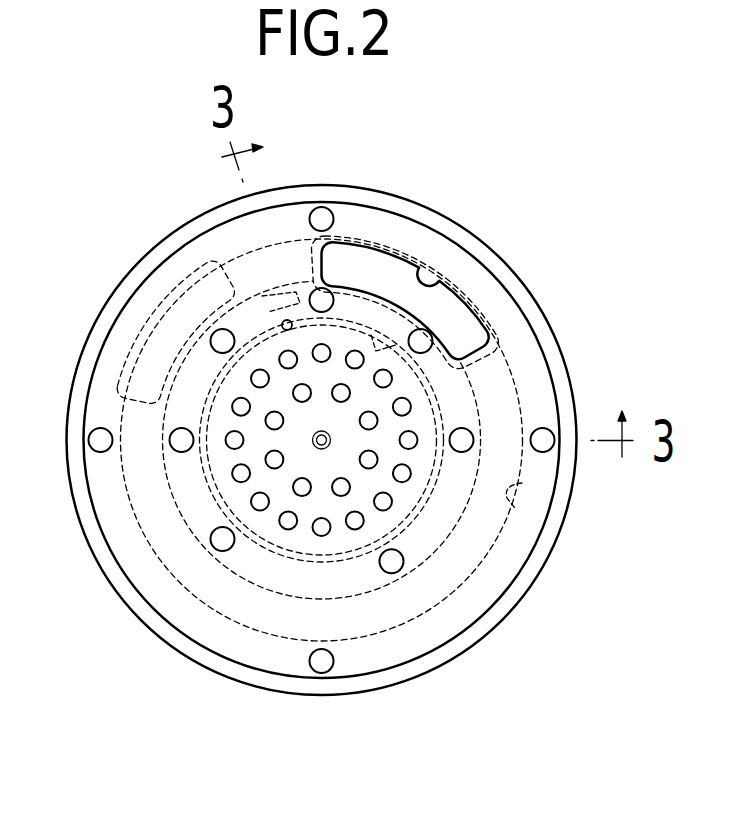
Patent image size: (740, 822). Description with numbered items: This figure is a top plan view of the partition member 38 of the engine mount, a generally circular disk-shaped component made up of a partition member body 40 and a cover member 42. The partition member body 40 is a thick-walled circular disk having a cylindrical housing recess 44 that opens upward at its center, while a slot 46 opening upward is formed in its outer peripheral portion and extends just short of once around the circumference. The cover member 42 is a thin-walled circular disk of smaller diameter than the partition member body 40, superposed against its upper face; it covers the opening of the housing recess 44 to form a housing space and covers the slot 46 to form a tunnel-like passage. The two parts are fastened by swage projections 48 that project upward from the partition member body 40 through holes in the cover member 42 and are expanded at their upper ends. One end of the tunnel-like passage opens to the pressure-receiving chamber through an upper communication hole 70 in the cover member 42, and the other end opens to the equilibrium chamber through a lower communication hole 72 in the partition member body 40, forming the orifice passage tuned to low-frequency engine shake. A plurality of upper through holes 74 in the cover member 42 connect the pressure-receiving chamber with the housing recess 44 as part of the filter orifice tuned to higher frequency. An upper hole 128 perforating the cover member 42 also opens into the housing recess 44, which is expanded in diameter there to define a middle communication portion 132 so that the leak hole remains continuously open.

The partition member 38 is at (576, 214).
The partition member body 40 is at (440, 223).
The cover member 42 is at (221, 632).
The housing recess 44 is at (371, 335).
The slot 46 is at (508, 500).
The swage projection 48 is at (222, 335).
The upper communication hole 70 is at (431, 284).
The lower communication hole 72 is at (122, 384).
The upper through holes 74 is at (258, 380).
The upper hole 128 is at (287, 322).
The middle communication portion 132 is at (232, 263).